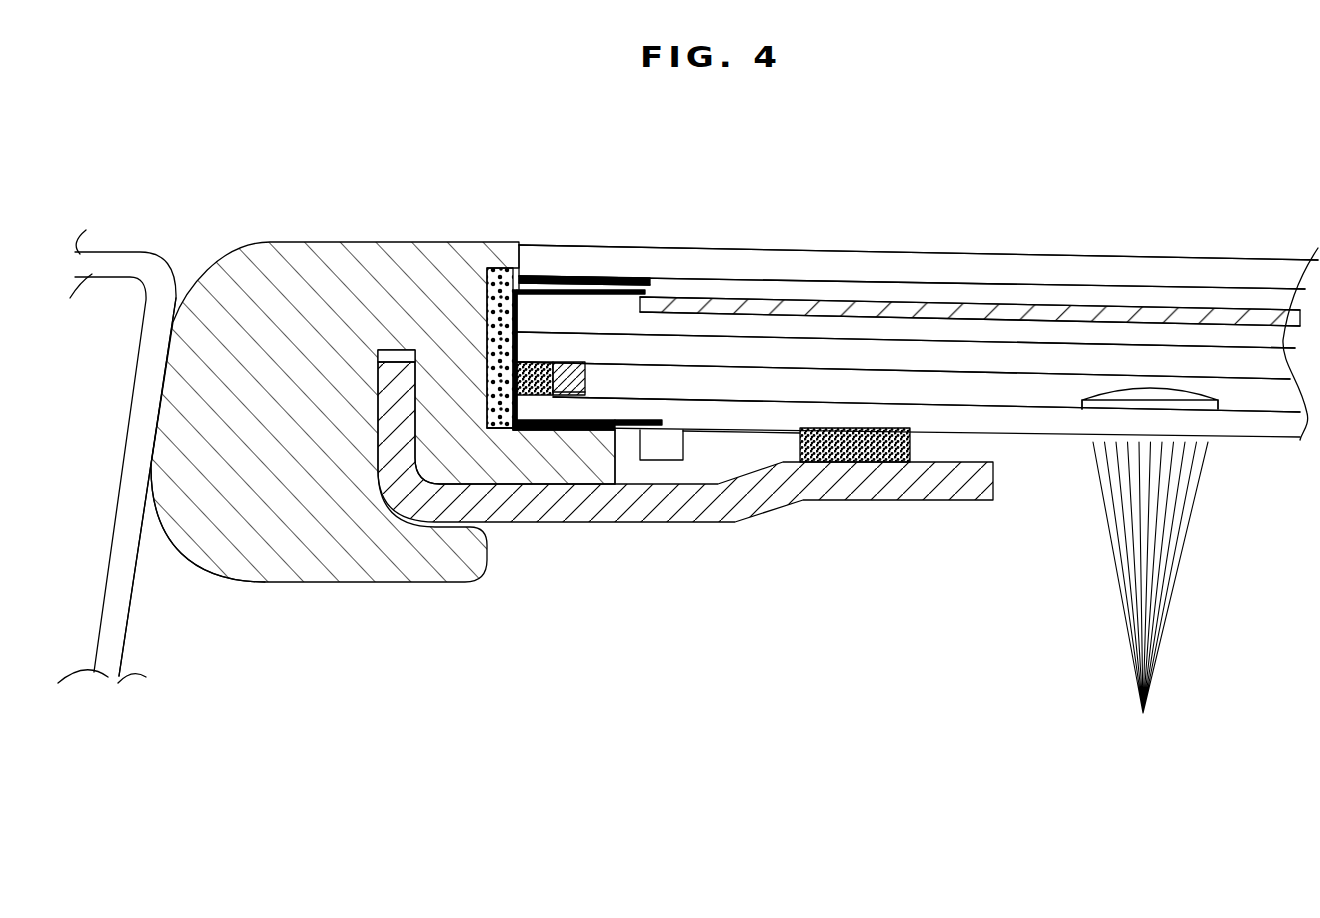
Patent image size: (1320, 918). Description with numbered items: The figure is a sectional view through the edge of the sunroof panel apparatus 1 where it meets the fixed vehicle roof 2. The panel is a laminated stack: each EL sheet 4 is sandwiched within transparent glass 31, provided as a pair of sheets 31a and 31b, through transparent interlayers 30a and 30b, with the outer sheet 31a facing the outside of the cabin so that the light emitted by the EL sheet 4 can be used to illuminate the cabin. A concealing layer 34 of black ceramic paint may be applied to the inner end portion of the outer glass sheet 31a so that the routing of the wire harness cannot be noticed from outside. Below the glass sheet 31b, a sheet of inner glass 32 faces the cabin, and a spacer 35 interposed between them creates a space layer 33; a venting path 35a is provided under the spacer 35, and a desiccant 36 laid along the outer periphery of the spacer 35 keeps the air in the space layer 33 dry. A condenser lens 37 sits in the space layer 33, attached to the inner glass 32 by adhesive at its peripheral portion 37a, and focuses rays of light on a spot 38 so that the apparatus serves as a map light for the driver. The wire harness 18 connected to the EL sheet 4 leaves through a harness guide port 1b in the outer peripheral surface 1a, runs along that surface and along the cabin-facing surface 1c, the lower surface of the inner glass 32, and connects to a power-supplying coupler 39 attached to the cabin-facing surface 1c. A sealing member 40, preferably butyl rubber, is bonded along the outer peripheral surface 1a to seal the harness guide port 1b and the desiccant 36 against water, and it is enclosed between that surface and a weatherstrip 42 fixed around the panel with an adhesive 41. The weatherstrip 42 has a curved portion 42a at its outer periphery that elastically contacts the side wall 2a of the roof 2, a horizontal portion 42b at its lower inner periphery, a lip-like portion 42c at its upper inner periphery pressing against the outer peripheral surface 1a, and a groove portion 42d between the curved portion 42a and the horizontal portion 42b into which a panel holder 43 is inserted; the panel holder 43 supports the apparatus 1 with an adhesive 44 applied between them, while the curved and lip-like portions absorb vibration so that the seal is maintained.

The sunroof panel apparatus 1 is at (893, 247).
The outer peripheral surface 1a is at (519, 245).
The harness guide port 1b is at (513, 300).
The cabin-facing surface 1c is at (705, 432).
The fixed vehicle roof 2 is at (120, 252).
The side wall 2a is at (130, 607).
The EL sheet 4 is at (770, 300).
The wire harness 18 is at (632, 425).
The transparent interlayer 30a is at (945, 295).
The transparent interlayer 30b is at (1077, 335).
The transparent glass 31 is at (616, 269).
The sheet of transparent glass 31a is at (1008, 272).
The sheet of transparent glass 31b is at (1137, 360).
The sheet of inner glass 32 is at (967, 417).
The space layer 33 is at (1027, 392).
The light shielding layer 34 is at (645, 274).
The spacer 35 is at (573, 396).
The venting path 35a is at (542, 396).
The desiccant 36 is at (513, 430).
The condenser lens 37 is at (1218, 398).
The peripheral portion 37a is at (1235, 425).
The spot 38 is at (1149, 724).
The power-supplying coupler 39 is at (670, 455).
The sealing member 40 is at (470, 258).
The adhesive 41 is at (590, 432).
The weatherstrip 42 is at (305, 229).
The curved portion 42a is at (198, 415).
The horizontal portion 42b is at (543, 470).
The lip-like portion 42c is at (504, 258).
The groove portion 42d is at (398, 350).
The panel holder 43 is at (818, 492).
The buffer member 44 is at (862, 455).